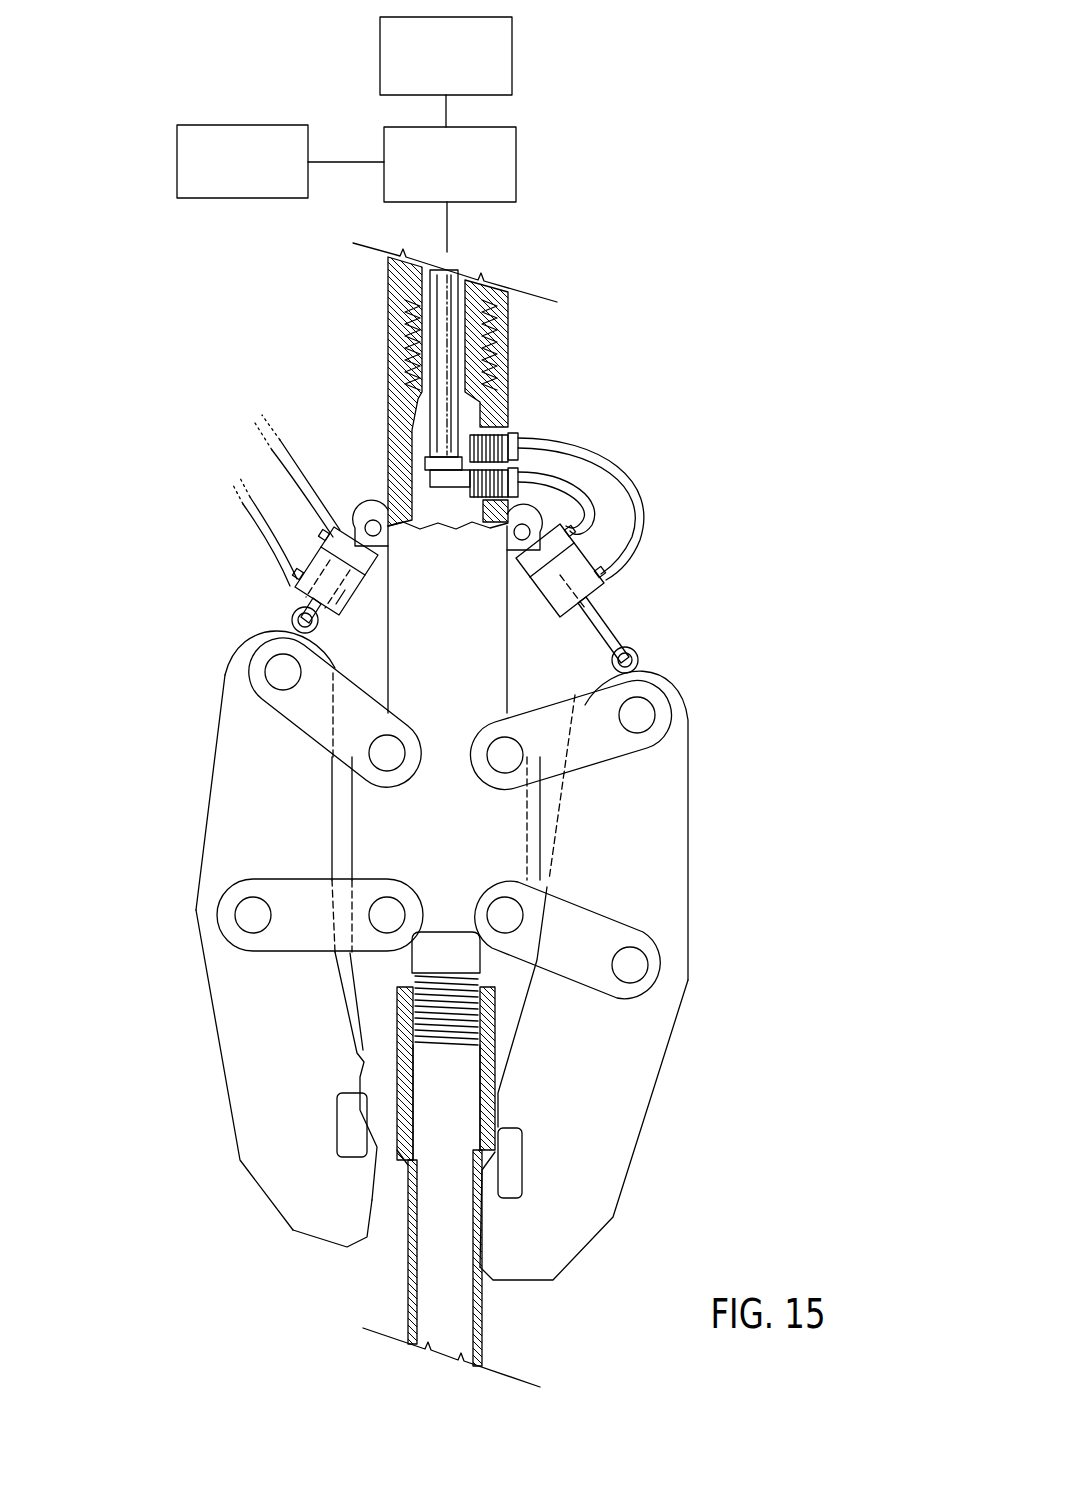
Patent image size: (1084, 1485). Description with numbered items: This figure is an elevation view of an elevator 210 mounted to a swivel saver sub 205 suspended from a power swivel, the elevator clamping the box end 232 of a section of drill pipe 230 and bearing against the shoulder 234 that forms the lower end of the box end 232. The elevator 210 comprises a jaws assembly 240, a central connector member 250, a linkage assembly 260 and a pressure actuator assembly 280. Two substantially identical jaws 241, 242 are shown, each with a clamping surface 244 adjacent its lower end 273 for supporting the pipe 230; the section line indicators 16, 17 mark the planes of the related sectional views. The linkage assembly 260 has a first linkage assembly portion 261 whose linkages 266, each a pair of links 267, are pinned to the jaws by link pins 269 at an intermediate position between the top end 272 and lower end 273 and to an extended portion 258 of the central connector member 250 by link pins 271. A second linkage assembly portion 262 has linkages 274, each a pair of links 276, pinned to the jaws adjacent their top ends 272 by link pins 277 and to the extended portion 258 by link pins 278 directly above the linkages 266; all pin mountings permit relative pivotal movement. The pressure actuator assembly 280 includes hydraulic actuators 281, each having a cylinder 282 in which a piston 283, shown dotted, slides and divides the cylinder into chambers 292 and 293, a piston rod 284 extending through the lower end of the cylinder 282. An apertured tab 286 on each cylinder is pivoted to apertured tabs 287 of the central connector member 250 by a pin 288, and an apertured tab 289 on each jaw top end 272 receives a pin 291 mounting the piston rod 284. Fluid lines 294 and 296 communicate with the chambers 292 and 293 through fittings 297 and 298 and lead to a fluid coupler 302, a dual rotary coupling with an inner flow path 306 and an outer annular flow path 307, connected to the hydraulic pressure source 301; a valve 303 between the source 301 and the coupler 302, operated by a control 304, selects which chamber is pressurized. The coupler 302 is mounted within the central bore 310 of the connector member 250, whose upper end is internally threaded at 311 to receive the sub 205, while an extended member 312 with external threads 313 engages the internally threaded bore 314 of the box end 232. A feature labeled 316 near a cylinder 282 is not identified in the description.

The section line 16- 16 is at (138, 940).
The section line 17- 17 is at (383, 1170).
The swivel saver sub 205 is at (500, 303).
The elevator 210 is at (723, 436).
The drill pipe 230 is at (470, 1325).
The box end 232 is at (397, 1048).
The shoulder 234 is at (397, 1160).
The jaws assembly 240 is at (723, 826).
The jaw 241 is at (217, 1043).
The jaw 242 is at (640, 1063).
The clamping surface 244 is at (343, 1130).
The central connector member 250 is at (487, 643).
The extended portion 258 is at (357, 826).
The linkage assembly 260 is at (186, 826).
The first linkage assembly portion 261 is at (216, 945).
The second linkage assembly portion 262 is at (248, 692).
The linkage 266 is at (281, 884).
The link 267 is at (297, 945).
The link pin 269 is at (253, 913).
The link pin 271 is at (390, 912).
The top end 272 is at (680, 684).
The lower end 273 is at (327, 1250).
The linkage 274 is at (277, 712).
The link 276 is at (345, 700).
The link pin 277 is at (280, 671).
The link pin 278 is at (503, 758).
The pressure actuator assembly 280 is at (255, 480).
The hydraulic actuator 281 is at (268, 576).
The cylinder 282 is at (380, 556).
The piston 283 is at (330, 560).
The piston rod 284 is at (300, 586).
The apertured tab 286 is at (358, 520).
The apertured tab 287 is at (373, 518).
The pin 288 is at (395, 530).
The apertured tab 289 is at (292, 620).
The pin 291 is at (318, 626).
The chamber 292 is at (362, 578).
The chamber 293 is at (372, 592).
The fluid line 294 is at (543, 488).
The fluid line 296 is at (570, 465).
The fitting 297 is at (574, 530).
The fitting 298 is at (606, 576).
The hydraulic pressure source 301 is at (512, 50).
The fluid coupler 302 is at (460, 341).
The valve 303 is at (516, 163).
The control 304 is at (177, 162).
The inner flow path 306 is at (470, 371).
The outer annular flow path 307 is at (465, 357).
The central bore 310 is at (416, 445).
The internal threads 311 is at (394, 294).
The extended member 312 is at (412, 962).
The external threads 313 is at (478, 977).
The internally threaded bore 314 is at (399, 991).
The cylinder wall 316 is at (363, 606).